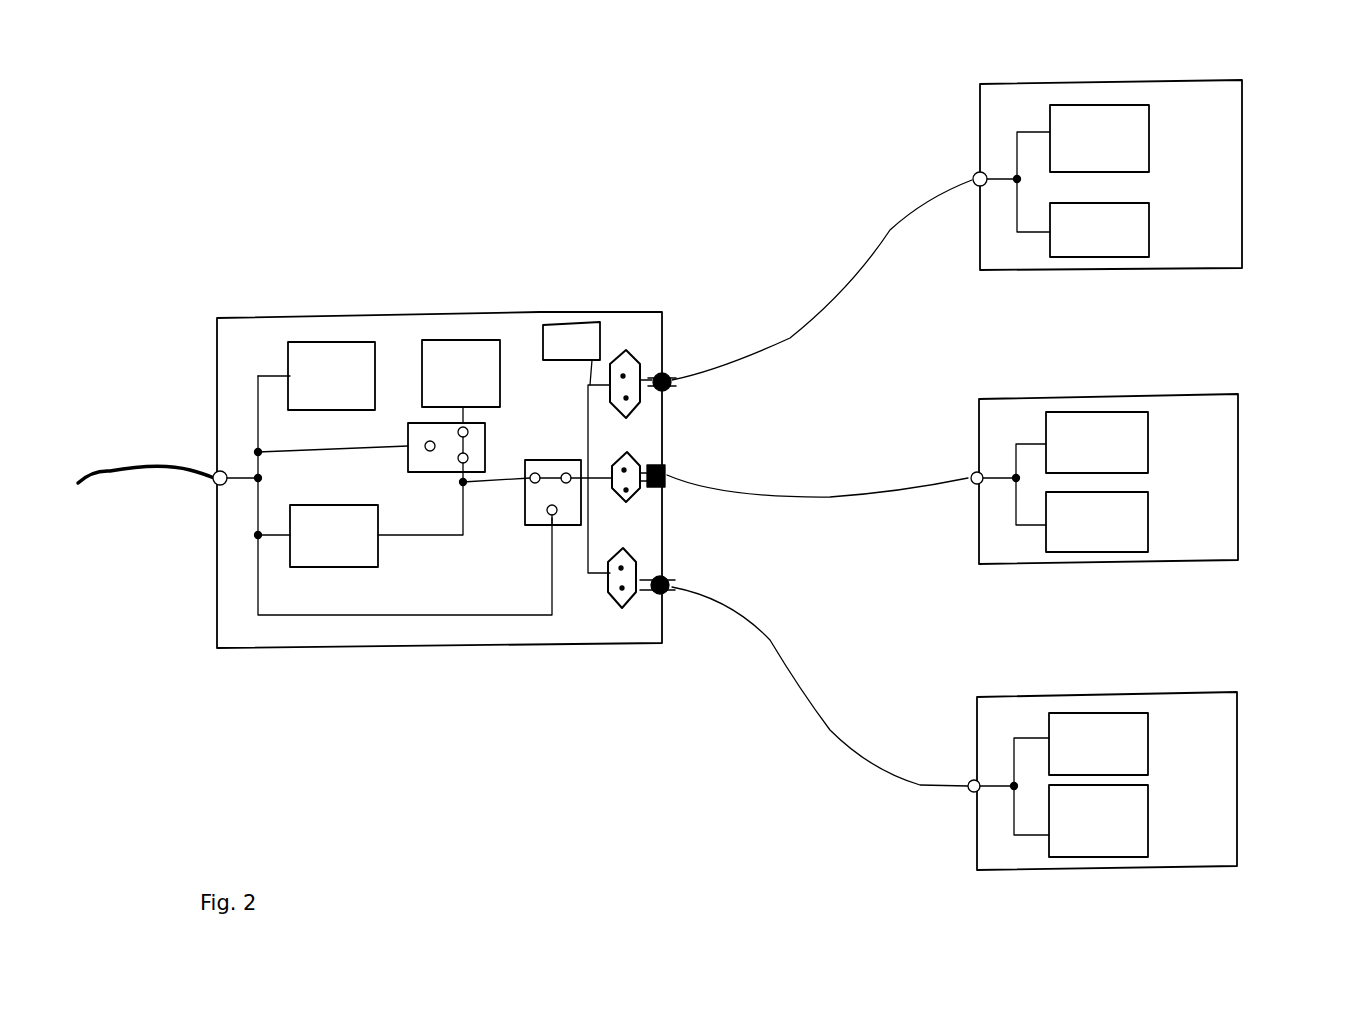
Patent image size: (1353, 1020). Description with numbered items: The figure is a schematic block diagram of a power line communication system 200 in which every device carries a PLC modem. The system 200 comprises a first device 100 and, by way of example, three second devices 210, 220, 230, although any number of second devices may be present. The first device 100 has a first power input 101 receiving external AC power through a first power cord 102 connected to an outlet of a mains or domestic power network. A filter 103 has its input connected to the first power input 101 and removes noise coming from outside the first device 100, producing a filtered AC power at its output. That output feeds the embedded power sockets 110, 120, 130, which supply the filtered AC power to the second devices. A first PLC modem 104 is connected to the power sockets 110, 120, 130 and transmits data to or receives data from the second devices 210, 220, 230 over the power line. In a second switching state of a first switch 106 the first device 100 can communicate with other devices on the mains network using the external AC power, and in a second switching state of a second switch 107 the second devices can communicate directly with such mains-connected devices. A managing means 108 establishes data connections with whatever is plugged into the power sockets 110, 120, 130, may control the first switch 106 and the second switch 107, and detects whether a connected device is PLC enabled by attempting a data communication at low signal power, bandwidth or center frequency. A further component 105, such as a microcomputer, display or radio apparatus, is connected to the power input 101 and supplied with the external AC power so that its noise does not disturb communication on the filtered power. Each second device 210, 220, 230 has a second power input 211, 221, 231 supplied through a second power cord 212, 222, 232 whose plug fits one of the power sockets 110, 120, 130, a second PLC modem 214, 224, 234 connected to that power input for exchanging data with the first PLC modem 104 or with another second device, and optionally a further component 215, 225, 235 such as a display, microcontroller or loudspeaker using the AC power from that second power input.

The first device 100 is at (413, 315).
The first power input 101 is at (213, 488).
The first power cord 102 is at (108, 471).
The filter 103 is at (333, 569).
The PLC modem 104 is at (462, 340).
The further component 105 is at (320, 340).
The first switch 106 is at (485, 434).
The second switch 107 is at (527, 527).
The managing means 108 is at (571, 353).
The power socket 110 is at (640, 352).
The power socket 120 is at (630, 455).
The power socket 130 is at (640, 556).
The power line communication system 200 is at (483, 171).
The second device 210 is at (1243, 145).
The second power input 211 is at (975, 172).
The second power cord 212 is at (843, 295).
The second PLC modem 214 is at (1088, 105).
The further component 215 is at (1115, 258).
The second device 220 is at (1243, 473).
The second power input 221 is at (972, 470).
The second power cord 222 is at (832, 493).
The second PLC modem 224 is at (1088, 410).
The further component 225 is at (1128, 553).
The second device 230 is at (1240, 768).
The second power input 231 is at (970, 780).
The second power cord 232 is at (808, 688).
The second PLC modem 234 is at (1092, 712).
The further component 235 is at (1122, 858).